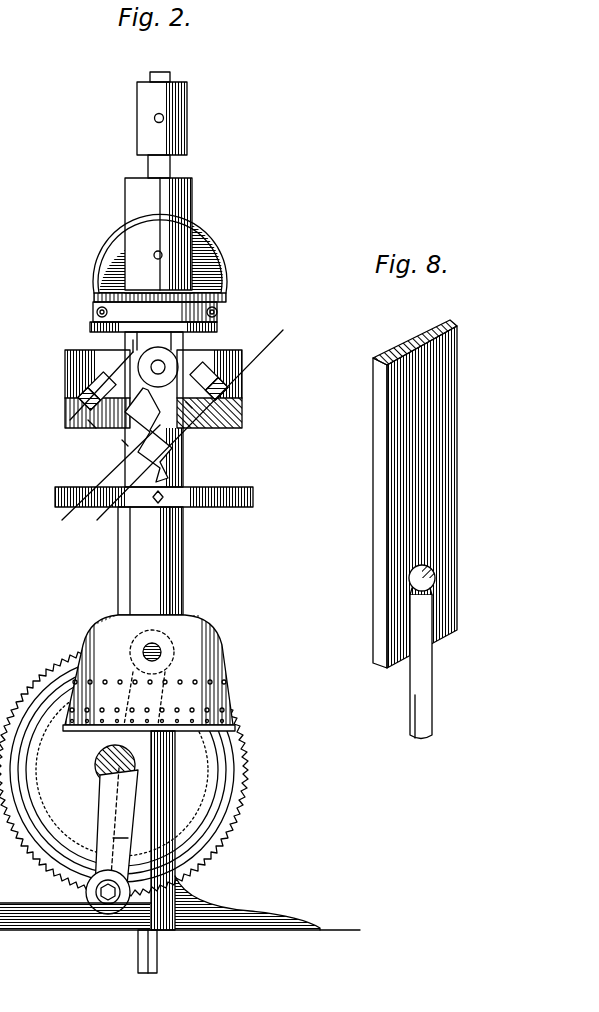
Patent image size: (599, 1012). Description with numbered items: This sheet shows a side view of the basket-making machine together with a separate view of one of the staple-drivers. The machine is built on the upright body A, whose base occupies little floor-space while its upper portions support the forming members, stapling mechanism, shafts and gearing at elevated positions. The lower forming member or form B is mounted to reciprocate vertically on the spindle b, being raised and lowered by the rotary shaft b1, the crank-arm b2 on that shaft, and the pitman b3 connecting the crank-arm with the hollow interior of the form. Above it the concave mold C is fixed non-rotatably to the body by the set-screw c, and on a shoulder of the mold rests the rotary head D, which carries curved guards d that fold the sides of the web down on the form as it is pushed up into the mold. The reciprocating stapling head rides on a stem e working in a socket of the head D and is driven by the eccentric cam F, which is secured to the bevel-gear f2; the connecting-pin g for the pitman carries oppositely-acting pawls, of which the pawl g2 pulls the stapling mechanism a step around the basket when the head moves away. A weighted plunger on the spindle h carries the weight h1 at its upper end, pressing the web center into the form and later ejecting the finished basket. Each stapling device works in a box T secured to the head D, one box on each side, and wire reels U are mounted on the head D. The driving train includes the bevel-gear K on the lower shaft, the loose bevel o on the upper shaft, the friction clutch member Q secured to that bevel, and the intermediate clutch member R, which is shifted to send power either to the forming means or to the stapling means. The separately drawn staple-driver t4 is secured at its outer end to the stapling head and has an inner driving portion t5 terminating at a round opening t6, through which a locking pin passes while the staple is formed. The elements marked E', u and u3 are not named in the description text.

In FIG. 2, the spindle h is at (158, 72).
In FIG. 2, the weight h1 is at (188, 128).
In FIG. 2, the set-screw c is at (162, 252).
In FIG. 2, the intermediate clutch member R is at (105, 238).
In FIG. 2, the friction clutch member Q is at (205, 250).
In FIG. 2, the bevel-gear o is at (195, 272).
In FIG. 2, the bevel-gear f2 is at (103, 297).
In FIG. 2, the connecting-pin g is at (148, 287).
In FIG. 2, the pawl g2 is at (238, 325).
In FIG. 2, the eccentric cam F is at (214, 311).
In FIG. 2, the block E' is at (182, 389).
In FIG. 2, the stem e is at (158, 367).
In FIG. 2, the box T is at (160, 440).
In FIG. 2, the reel U is at (80, 394).
In FIG. 2, the arm u is at (132, 350).
In FIG. 2, the pin u3 is at (205, 438).
In FIG. 2, the mold C is at (86, 422).
In FIG. 2, the curved guard d is at (75, 506).
In FIG. 2, the rotary head D is at (172, 565).
In FIG. 2, the form B is at (226, 646).
In FIG. 2, the bevel-gear K is at (218, 752).
In FIG. 2, the upright body A is at (155, 798).
In FIG. 2, the rotary shaft b1 is at (102, 757).
In FIG. 2, the crank-arm b2 is at (100, 792).
In FIG. 2, the pitman b3 is at (118, 840).
In FIG. 2, the spindle b is at (140, 955).
In FIG. 8, the staple-driver t4 is at (432, 446).
In FIG. 8, the round opening t6 is at (433, 572).
In FIG. 8, the driving portion t5 is at (430, 682).